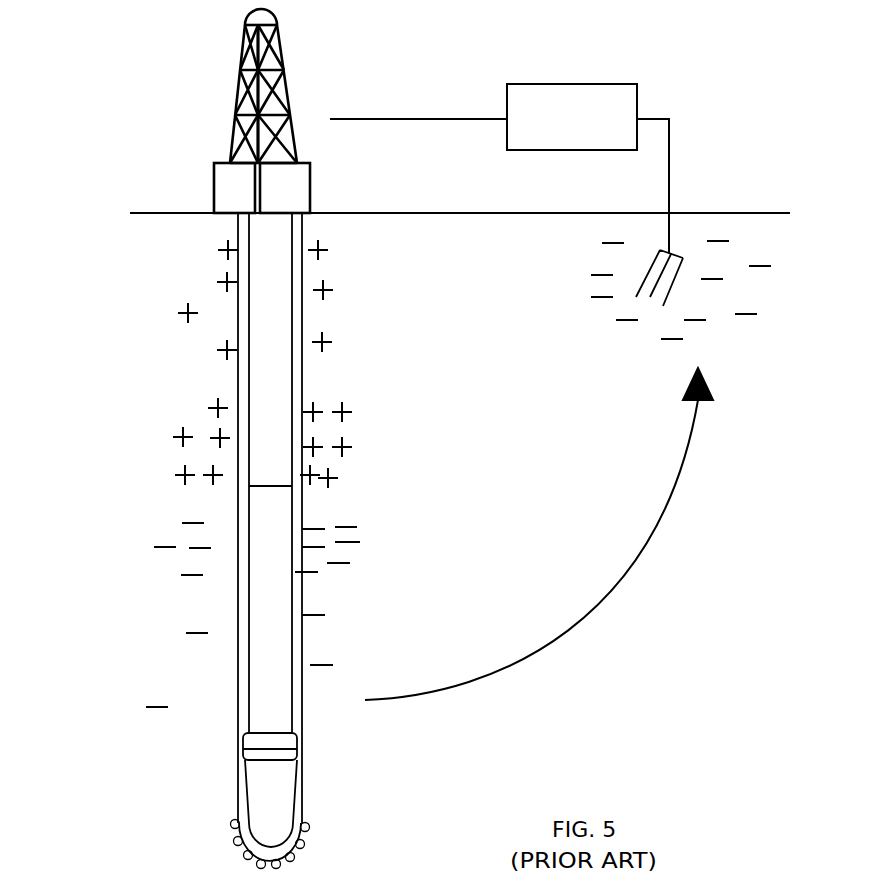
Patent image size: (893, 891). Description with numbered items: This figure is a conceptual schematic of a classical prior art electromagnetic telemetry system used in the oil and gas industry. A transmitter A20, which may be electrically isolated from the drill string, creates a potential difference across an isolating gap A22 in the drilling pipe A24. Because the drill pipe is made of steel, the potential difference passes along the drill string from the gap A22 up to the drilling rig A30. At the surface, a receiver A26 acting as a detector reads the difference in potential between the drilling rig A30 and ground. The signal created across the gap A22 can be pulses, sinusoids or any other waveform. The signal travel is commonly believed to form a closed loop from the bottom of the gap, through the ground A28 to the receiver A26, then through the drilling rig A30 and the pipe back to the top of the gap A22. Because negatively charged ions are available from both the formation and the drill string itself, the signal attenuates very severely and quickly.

The transmitter A20 is at (262, 577).
The isolating gap A22 is at (262, 498).
The drilling pipe A24 is at (283, 329).
The receiver A26 is at (550, 107).
The ground A28 is at (577, 640).
The drilling rig A30 is at (229, 148).